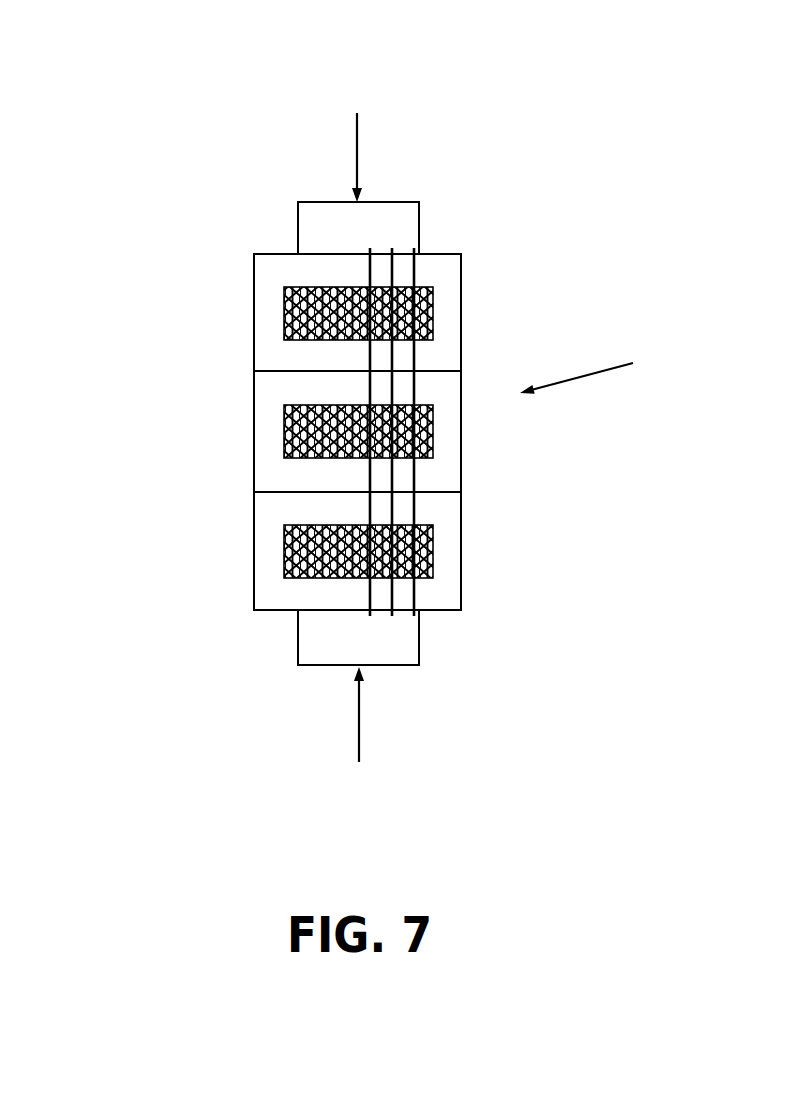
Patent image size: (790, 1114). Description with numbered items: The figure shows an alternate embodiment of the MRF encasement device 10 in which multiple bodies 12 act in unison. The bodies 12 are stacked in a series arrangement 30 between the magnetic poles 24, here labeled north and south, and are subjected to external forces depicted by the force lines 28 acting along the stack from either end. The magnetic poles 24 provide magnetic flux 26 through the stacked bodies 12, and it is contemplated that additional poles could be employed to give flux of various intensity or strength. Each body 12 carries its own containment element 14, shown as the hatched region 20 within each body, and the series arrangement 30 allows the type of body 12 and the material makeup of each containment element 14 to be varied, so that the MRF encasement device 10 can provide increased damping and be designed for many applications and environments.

The MRF encasement device 10 is at (146, 121).
The body 12 is at (463, 266).
The containment element 14 is at (443, 395).
The active material 20 is at (283, 412).
The magnetic pole 24 is at (420, 200).
The magnetic flux 26 is at (418, 476).
The force lines 28 is at (357, 133).
The series arrangement 30 is at (595, 372).